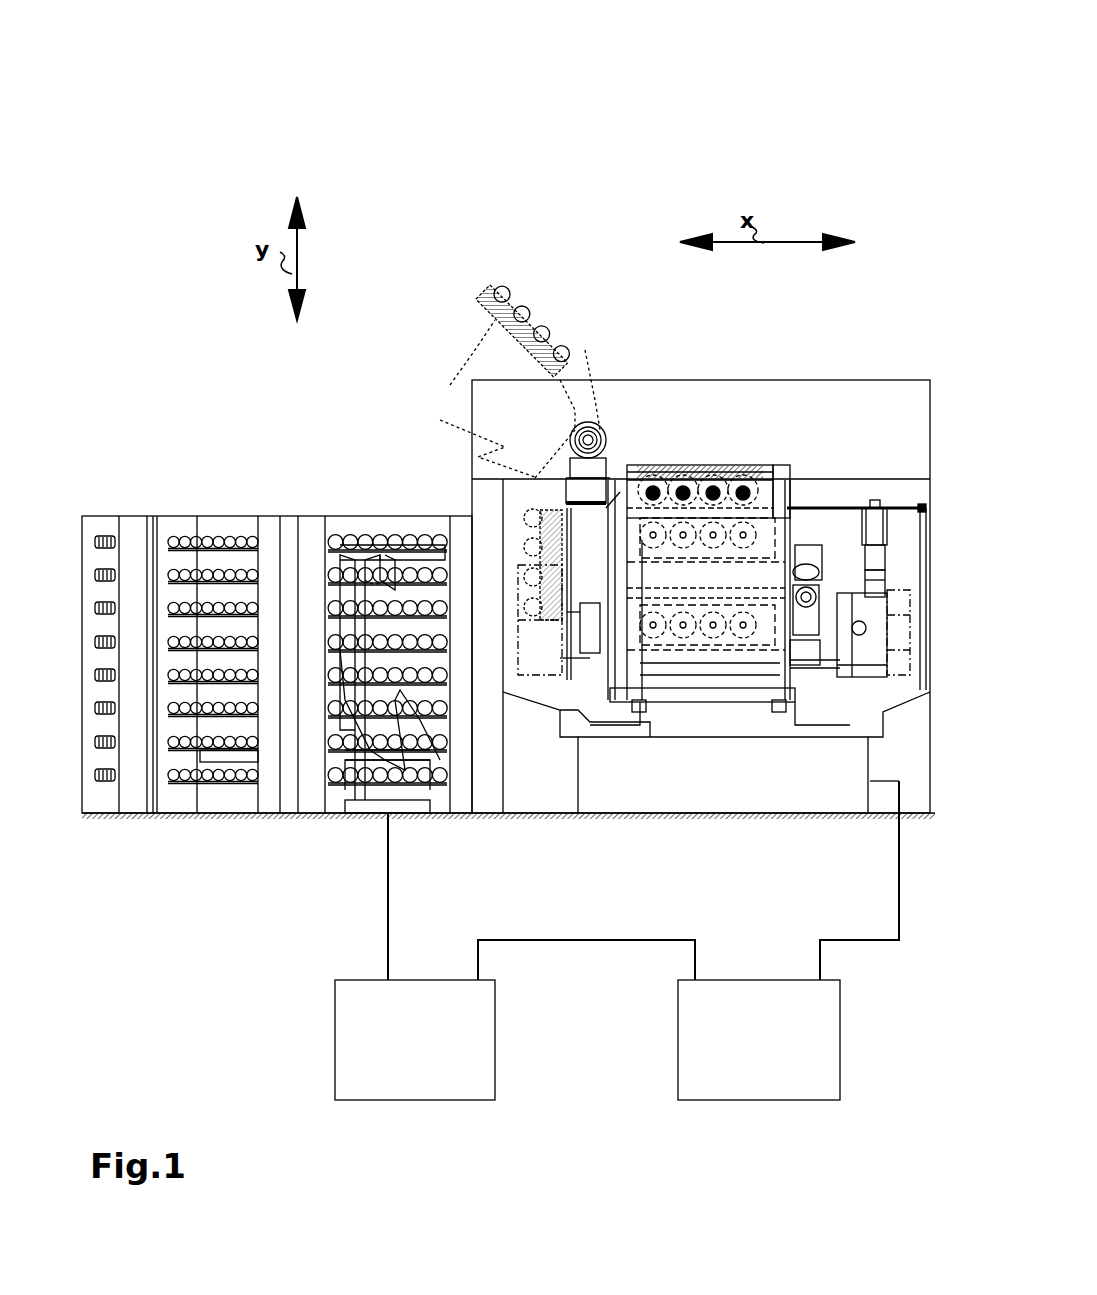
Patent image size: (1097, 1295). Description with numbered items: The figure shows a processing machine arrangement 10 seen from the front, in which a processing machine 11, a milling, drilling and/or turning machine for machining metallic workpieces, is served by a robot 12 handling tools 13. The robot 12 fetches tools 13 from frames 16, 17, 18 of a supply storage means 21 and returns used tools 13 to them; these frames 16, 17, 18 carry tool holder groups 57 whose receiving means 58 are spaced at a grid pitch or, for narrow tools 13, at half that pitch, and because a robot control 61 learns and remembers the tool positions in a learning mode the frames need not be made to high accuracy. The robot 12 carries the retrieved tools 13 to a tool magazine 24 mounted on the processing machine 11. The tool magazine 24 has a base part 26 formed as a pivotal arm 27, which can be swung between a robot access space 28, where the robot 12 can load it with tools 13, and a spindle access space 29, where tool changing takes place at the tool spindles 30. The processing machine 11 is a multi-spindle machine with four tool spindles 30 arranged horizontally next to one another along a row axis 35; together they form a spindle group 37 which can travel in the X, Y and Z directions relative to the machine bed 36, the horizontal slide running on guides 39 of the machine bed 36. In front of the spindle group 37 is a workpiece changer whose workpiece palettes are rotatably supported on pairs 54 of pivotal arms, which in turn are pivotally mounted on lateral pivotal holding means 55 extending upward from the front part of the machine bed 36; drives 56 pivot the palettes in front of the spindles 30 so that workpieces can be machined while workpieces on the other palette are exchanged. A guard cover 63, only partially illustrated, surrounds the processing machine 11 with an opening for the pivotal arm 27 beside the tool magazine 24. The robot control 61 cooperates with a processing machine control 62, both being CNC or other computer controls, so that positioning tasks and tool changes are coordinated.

The processing machine arrangement 10 is at (804, 74).
The processing machine 11 is at (785, 367).
The robot 12 is at (348, 812).
The tools 13 is at (178, 538).
The frame 16 is at (384, 522).
The frame 17 is at (217, 522).
The frame 18 is at (108, 522).
The supply storage means 21 is at (261, 485).
The tool magazine 24 is at (550, 308).
The base part 26 is at (476, 399).
The pivotal arm 27 is at (607, 456).
The robot access space 28 is at (510, 535).
The spindle access space 29 is at (738, 455).
The tool spindles 30 is at (794, 468).
The row axis 35 is at (782, 522).
The machine bed 36 is at (764, 812).
The spindle group 37 is at (698, 660).
The guides 39 is at (640, 714).
The pairs of pivotal arms 54 is at (835, 668).
The pivotal holding means 55 is at (870, 507).
The drives 56 is at (813, 548).
The tool holder groups 57 is at (405, 785).
The receiving means 58 is at (222, 785).
The robot control 61 is at (515, 956).
The processing machine control 62 is at (788, 940).
The guard cover 63 is at (908, 380).